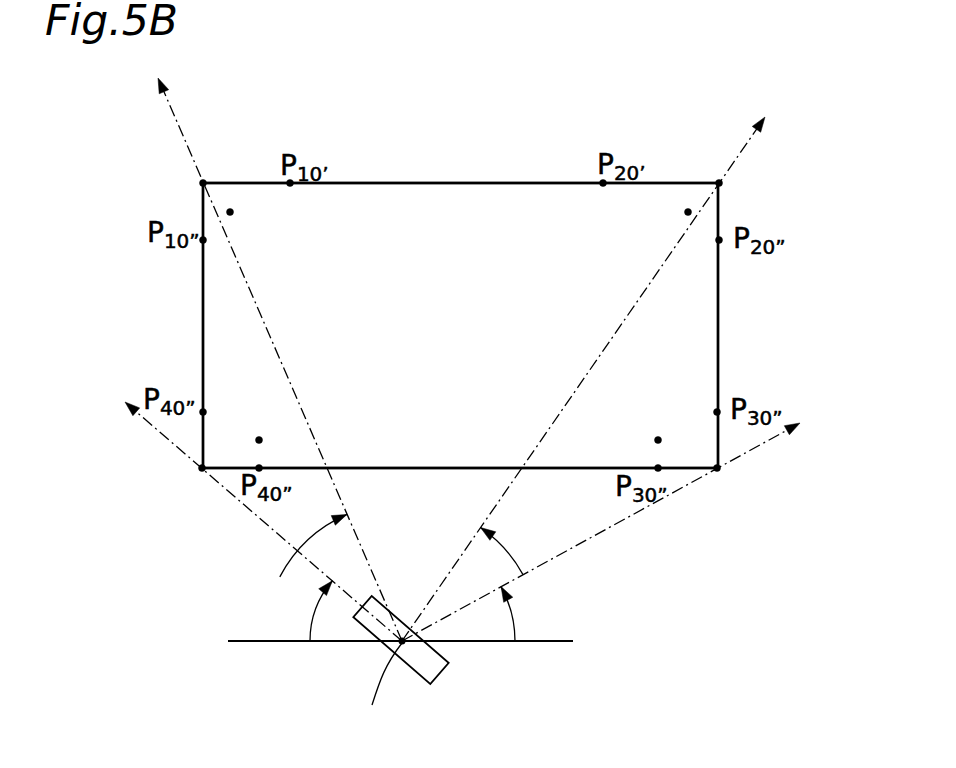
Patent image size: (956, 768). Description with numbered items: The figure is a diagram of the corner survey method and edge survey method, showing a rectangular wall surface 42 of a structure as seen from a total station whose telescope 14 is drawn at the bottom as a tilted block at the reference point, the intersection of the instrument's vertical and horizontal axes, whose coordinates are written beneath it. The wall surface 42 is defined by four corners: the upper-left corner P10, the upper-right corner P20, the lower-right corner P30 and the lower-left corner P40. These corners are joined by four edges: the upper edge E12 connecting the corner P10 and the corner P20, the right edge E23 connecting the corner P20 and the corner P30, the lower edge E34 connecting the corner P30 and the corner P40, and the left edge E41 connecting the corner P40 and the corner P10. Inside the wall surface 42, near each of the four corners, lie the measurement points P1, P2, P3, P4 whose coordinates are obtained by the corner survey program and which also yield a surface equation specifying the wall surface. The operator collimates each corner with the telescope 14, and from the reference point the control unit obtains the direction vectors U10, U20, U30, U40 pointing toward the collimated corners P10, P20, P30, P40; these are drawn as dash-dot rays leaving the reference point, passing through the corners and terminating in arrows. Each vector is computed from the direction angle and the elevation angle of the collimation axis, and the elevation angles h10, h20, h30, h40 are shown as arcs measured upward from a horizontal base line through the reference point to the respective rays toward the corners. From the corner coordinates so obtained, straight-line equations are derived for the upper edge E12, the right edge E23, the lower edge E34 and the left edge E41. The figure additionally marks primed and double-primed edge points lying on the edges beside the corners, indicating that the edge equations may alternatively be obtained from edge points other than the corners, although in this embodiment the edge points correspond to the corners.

The telescope 14 is at (440, 673).
The wall surface 42 is at (464, 195).
The upper edge E12 is at (367, 182).
The right edge E23 is at (718, 312).
The lower edge E34 is at (412, 470).
The left edge E41 is at (202, 318).
The direction vector toward corner P10 U10 is at (265, 87).
The direction vector toward corner P20 U20 is at (738, 157).
The direction vector toward corner P30 U30 is at (638, 508).
The direction vector toward corner P40 U40 is at (248, 513).
The elevation angle h10 is at (311, 540).
The elevation angle h20 is at (515, 546).
The elevation angle h30 is at (533, 614).
The elevation angle h40 is at (297, 611).
The corner P10 is at (224, 168).
The corner P20 is at (746, 189).
The corner P30 is at (743, 485).
The corner P40 is at (184, 486).
The measurement point P1 is at (251, 223).
The measurement point P2 is at (670, 212).
The measurement point P3 is at (660, 422).
The measurement point P4 is at (261, 423).